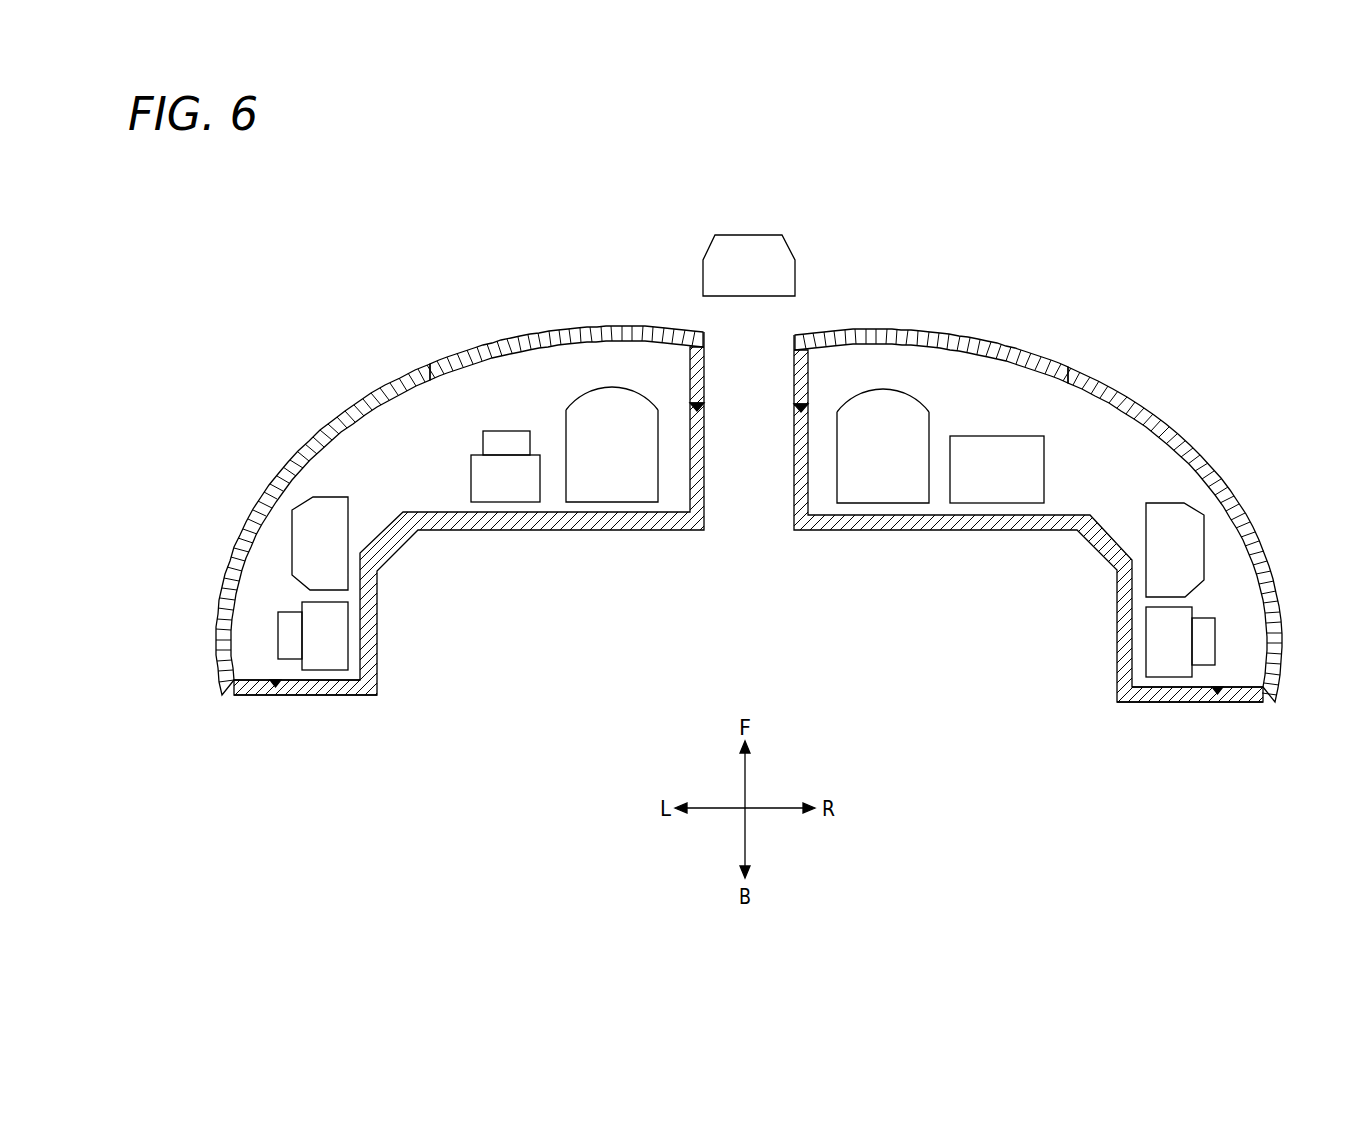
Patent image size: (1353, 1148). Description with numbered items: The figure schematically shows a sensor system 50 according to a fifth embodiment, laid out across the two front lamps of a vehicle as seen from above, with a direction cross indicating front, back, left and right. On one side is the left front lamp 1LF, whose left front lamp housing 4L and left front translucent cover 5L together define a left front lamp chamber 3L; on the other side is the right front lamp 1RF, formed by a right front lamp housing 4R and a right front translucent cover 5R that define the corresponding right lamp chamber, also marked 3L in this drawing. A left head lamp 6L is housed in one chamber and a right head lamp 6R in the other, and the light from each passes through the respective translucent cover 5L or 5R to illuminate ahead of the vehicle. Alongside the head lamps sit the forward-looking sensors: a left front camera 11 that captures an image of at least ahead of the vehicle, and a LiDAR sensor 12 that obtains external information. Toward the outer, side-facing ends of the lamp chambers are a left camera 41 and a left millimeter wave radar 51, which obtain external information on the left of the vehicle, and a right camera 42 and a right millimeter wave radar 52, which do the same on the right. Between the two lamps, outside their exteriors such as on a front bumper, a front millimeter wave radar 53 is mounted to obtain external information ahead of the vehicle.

The sensor system 50 is at (875, 205).
The front millimeter wave radar 53 is at (750, 240).
The left front lamp 1LF is at (469, 517).
The right front lamp 1RF is at (1028, 519).
The left front lamp chamber 3L is at (372, 428).
The right front lamp housing 4R is at (320, 697).
The left front lamp housing 4L is at (1168, 703).
The right front translucent cover 5R is at (478, 360).
The left front translucent cover 5L is at (1012, 358).
The left millimeter wave radar 51 is at (340, 572).
The right millimeter wave radar 52 is at (1155, 576).
The left camera 41 is at (335, 640).
The right camera 42 is at (1155, 645).
The left front camera 11 is at (503, 480).
The LiDAR sensor 12 is at (1000, 487).
The right head lamp 6R is at (610, 487).
The left head lamp 6L is at (885, 487).